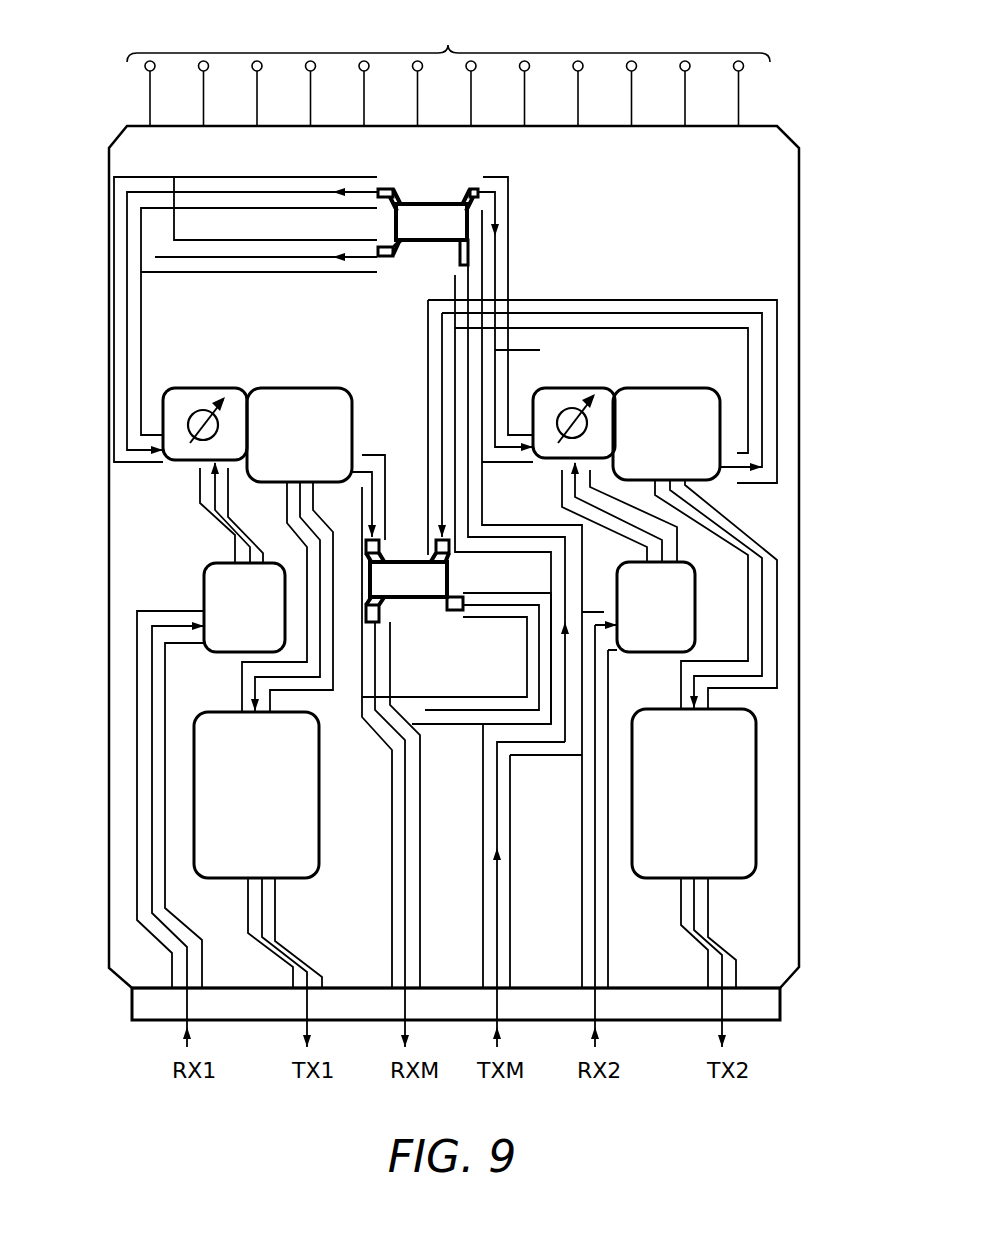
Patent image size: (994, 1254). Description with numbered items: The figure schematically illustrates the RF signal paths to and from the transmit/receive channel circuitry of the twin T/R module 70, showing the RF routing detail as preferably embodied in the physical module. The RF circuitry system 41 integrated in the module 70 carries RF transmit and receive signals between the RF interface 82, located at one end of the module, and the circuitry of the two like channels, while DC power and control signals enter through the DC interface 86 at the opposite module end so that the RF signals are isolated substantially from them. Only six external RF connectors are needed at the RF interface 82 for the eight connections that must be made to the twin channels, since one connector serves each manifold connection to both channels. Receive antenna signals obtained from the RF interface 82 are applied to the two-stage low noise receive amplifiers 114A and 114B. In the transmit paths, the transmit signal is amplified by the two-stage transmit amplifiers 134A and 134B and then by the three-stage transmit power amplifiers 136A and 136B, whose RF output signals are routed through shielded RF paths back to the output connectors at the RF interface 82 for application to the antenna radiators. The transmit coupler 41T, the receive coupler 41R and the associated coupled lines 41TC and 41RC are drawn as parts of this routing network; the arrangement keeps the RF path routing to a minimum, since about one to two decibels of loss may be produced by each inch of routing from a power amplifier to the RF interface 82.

The twin T/R module 70 is at (694, 223).
The RF interface 82 is at (762, 1005).
The DC interface 86 is at (755, 90).
The RF circuitry system 41 is at (118, 297).
The transmit coupler 41T is at (421, 202).
The receive coupler 41R is at (408, 603).
The transmit coupled line 41TC is at (142, 330).
The receive coupled line 41RC is at (677, 298).
The 2-stage transmit amplifier 134A is at (262, 387).
The 2-stage transmit amplifier 134B is at (625, 388).
The 2-stage low noise receive amplifier 114A is at (222, 588).
The 2-stage low noise receive amplifier 114B is at (695, 583).
The 3-stage transmit power amplifier 136A is at (199, 792).
The 3-stage transmit power amplifier 136B is at (743, 788).